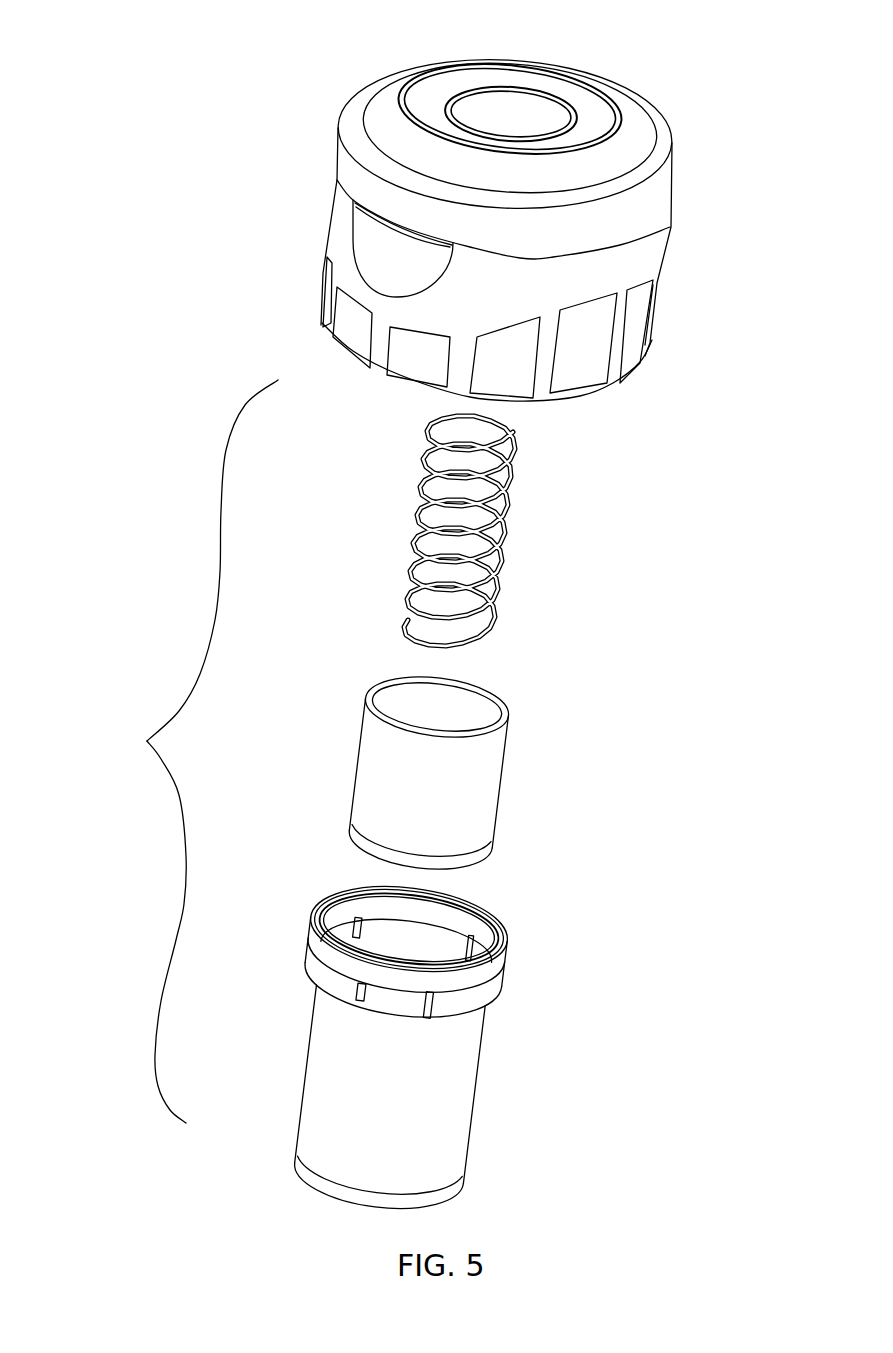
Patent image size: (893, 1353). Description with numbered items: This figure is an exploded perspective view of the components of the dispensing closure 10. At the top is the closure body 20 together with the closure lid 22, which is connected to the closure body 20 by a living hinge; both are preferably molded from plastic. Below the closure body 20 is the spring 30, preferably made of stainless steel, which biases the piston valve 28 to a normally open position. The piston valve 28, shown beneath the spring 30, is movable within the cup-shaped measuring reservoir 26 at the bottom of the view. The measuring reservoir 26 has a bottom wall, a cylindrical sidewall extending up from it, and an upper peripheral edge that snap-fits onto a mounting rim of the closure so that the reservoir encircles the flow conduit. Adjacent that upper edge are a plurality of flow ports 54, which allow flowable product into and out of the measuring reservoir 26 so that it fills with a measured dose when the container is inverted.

The dispensing closure 10 is at (117, 739).
The closure body 20 is at (668, 294).
The closure lid 22 is at (668, 143).
The measuring reservoir 26 is at (473, 1129).
The piston valve 28 is at (506, 790).
The spring 30 is at (508, 520).
The flow ports 54 is at (350, 925).